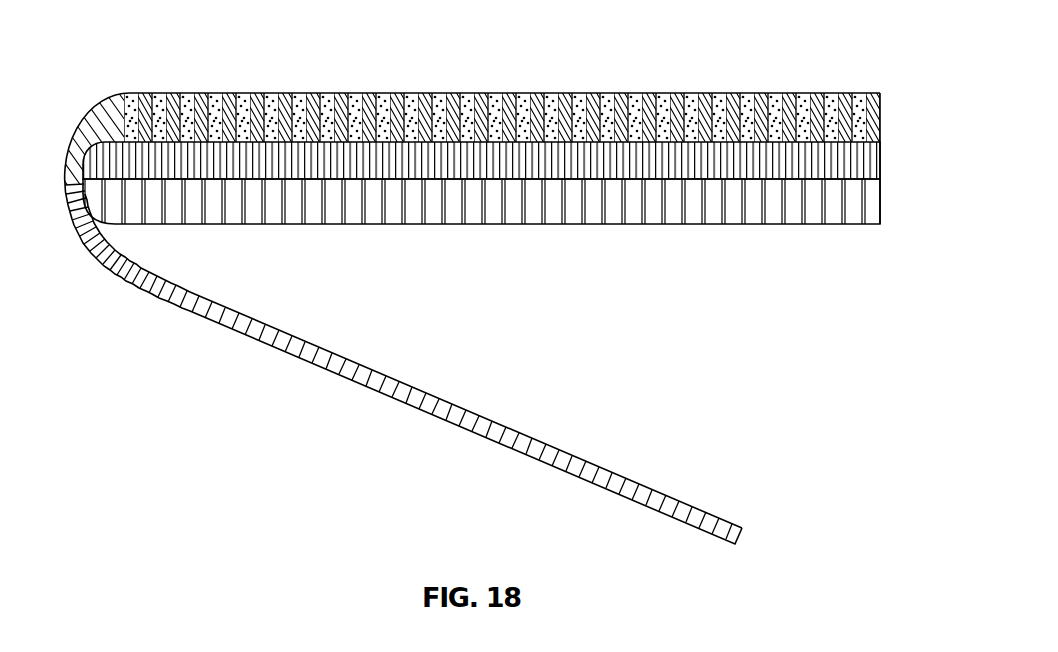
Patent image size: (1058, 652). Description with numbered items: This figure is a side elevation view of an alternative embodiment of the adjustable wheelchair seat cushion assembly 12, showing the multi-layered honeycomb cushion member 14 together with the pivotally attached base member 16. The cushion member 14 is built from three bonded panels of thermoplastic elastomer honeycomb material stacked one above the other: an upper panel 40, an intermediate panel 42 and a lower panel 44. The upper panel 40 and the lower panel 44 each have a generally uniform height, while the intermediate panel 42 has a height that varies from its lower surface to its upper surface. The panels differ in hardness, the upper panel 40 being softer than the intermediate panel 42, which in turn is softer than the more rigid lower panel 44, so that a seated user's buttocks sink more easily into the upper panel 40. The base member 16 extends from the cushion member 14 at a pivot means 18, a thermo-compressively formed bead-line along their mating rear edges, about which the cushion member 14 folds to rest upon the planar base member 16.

The seat cushion assembly 12 is at (775, 406).
The cushion member 14 is at (336, 86).
The base member 16 is at (648, 515).
The pivot means 18 is at (78, 197).
The upper panel 40 is at (862, 121).
The intermediate panel 42 is at (862, 163).
The lower panel 44 is at (860, 206).